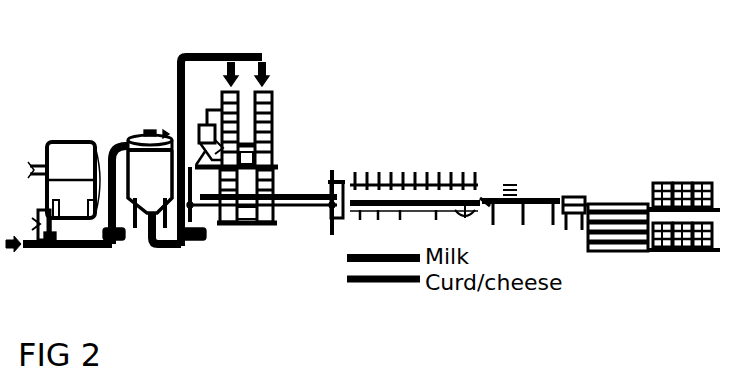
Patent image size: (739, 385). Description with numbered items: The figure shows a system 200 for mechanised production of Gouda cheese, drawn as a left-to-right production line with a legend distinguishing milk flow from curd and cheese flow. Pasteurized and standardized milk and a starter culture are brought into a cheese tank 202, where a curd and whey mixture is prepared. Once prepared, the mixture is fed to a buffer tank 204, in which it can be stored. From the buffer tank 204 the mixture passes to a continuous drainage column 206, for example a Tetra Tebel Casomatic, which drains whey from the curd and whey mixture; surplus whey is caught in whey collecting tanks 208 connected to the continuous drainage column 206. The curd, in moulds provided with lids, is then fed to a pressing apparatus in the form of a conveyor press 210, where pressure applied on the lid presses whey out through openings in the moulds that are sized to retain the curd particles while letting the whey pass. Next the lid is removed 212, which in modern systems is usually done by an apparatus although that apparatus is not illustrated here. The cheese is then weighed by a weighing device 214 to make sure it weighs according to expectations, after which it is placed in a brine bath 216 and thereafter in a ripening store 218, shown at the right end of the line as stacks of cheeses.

The system 200 is at (120, 66).
The cheese tank 202 is at (70, 140).
The buffer tank 204 is at (144, 132).
The continuous drainage column 206 is at (250, 109).
The whey collecting tanks 208 is at (198, 123).
The conveyor press 210 is at (409, 171).
The lid removal 212 is at (509, 180).
The weighing device 214 is at (574, 195).
The brine bath 216 is at (618, 202).
The ripening store 218 is at (685, 180).